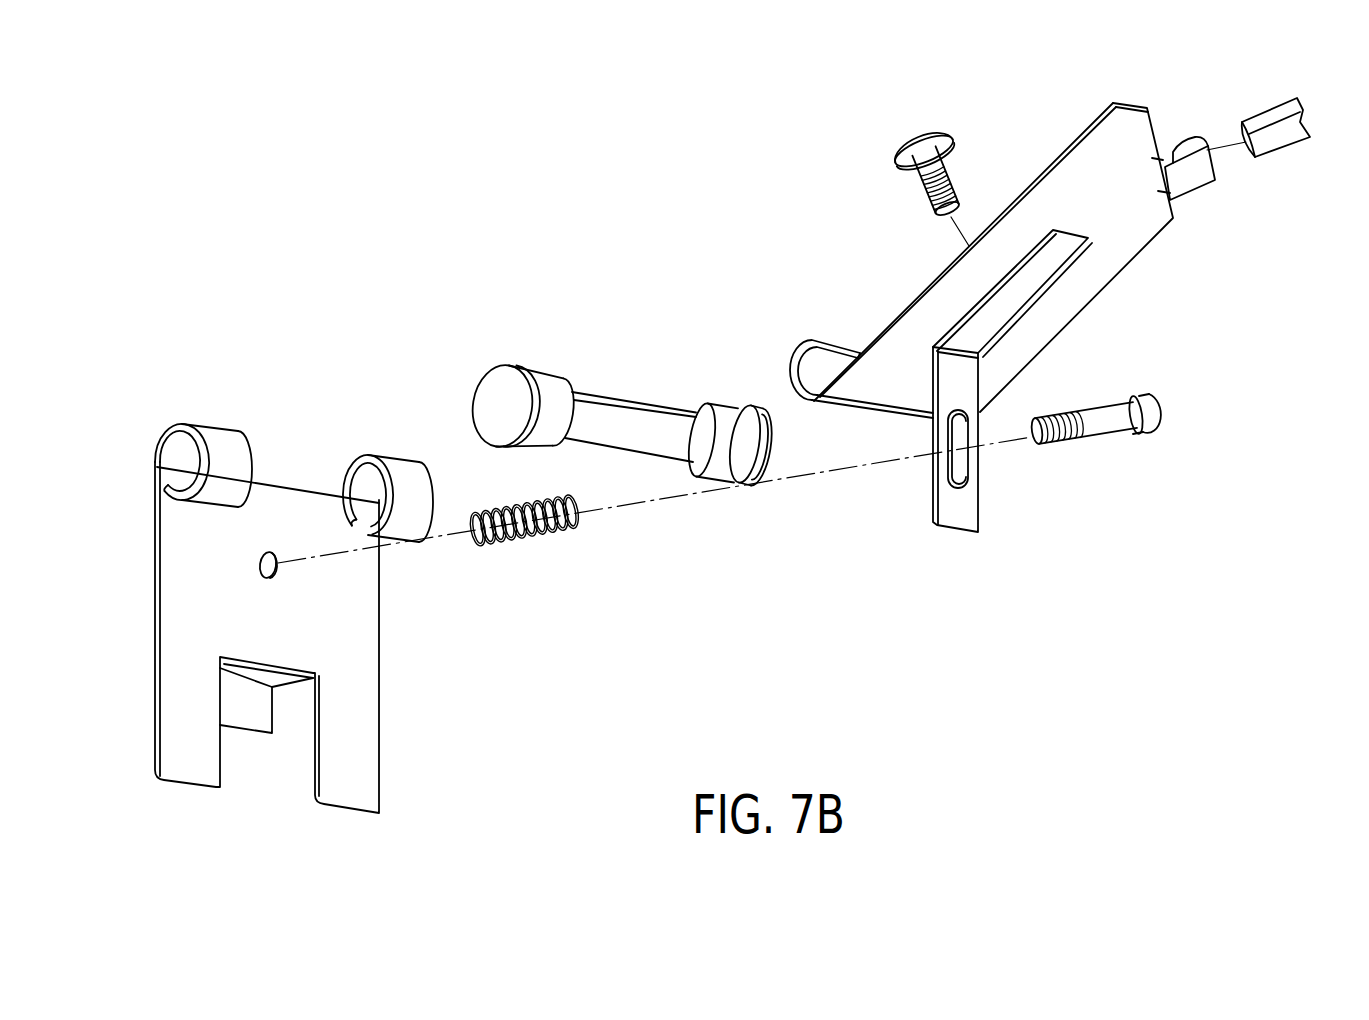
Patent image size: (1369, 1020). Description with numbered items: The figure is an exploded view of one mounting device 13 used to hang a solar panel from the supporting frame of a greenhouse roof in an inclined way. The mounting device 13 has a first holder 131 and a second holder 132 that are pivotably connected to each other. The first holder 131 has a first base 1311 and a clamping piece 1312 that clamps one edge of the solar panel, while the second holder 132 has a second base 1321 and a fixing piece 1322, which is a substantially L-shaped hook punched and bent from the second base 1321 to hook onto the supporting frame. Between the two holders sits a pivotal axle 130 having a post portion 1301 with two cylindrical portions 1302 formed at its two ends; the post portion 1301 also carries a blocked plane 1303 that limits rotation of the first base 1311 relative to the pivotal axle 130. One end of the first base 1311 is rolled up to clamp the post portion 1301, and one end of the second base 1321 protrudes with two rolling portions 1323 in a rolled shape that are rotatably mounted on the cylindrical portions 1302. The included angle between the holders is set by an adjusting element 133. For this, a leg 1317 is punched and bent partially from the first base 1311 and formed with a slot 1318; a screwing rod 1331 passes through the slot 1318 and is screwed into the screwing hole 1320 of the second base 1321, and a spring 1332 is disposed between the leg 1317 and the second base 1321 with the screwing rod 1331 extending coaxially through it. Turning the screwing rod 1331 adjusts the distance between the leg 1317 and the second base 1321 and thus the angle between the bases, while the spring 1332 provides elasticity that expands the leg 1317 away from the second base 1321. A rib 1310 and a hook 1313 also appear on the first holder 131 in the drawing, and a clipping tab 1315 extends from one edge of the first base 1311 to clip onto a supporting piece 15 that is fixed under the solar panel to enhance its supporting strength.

The mounting device 13 is at (257, 139).
The supporting piece 15 is at (1275, 112).
The pivotal axle 130 is at (497, 361).
The post portion 1301 is at (637, 440).
The cylindrical portions 1302 is at (552, 390).
The blocked plane 1303 is at (637, 407).
The first holder 131 is at (1030, 178).
The rib 1310 is at (1005, 300).
The first base 1311 is at (1083, 287).
The clamping piece 1312 is at (925, 194).
The hook 1313 is at (838, 342).
The clipping tab 1315 is at (1192, 180).
The leg 1317 is at (967, 510).
The slot 1318 is at (953, 463).
The second holder 132 is at (392, 648).
The screwing hole 1320 is at (273, 565).
The second base 1321 is at (337, 637).
The fixing piece 1322 is at (247, 715).
The rolling portions 1323 is at (405, 472).
The adjusting element 133 is at (568, 600).
The screwing rod 1331 is at (1100, 430).
The spring 1332 is at (532, 537).